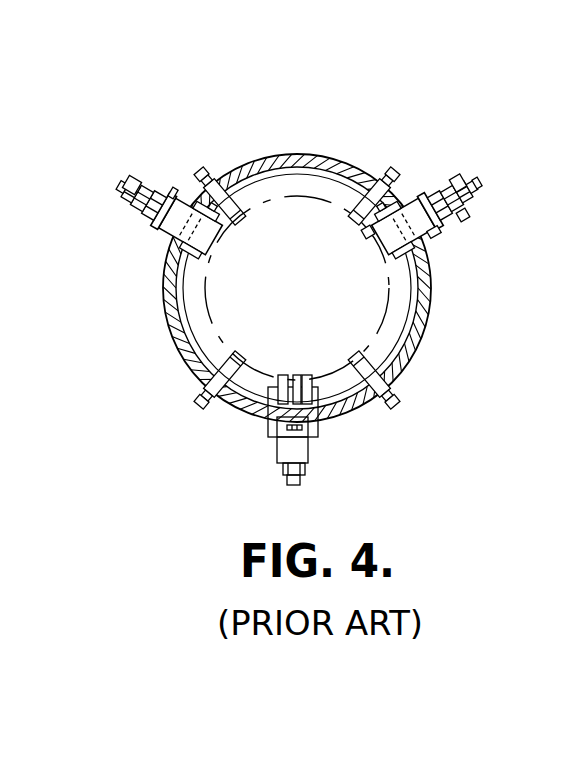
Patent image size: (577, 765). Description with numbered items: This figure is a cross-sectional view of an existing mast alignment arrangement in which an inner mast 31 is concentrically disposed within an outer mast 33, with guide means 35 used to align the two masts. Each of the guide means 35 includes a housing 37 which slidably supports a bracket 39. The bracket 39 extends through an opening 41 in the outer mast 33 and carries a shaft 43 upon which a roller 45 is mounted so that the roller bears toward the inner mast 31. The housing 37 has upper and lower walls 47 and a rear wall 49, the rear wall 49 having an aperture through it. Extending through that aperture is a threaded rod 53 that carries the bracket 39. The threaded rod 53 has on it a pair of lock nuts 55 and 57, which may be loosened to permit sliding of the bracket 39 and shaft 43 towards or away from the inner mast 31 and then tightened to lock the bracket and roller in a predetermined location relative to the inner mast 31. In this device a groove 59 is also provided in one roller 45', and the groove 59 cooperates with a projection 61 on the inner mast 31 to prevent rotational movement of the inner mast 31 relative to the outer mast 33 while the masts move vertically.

The inner mast 31 is at (208, 314).
The outer mast 33 is at (277, 153).
The guide means 35 is at (112, 105).
The housing 37 is at (427, 185).
The bracket 39 is at (437, 235).
The opening 41 is at (320, 418).
The shaft 43 is at (165, 276).
The roller 45 is at (338, 235).
The grooved roller 45' is at (230, 427).
The upper and lower walls 47 is at (142, 188).
The rear wall 49 is at (143, 180).
The threaded rod 53 is at (172, 193).
The lock nut 55 is at (456, 183).
The lock nut 57 is at (466, 218).
The groove 59 is at (303, 373).
The projection 61 is at (291, 373).